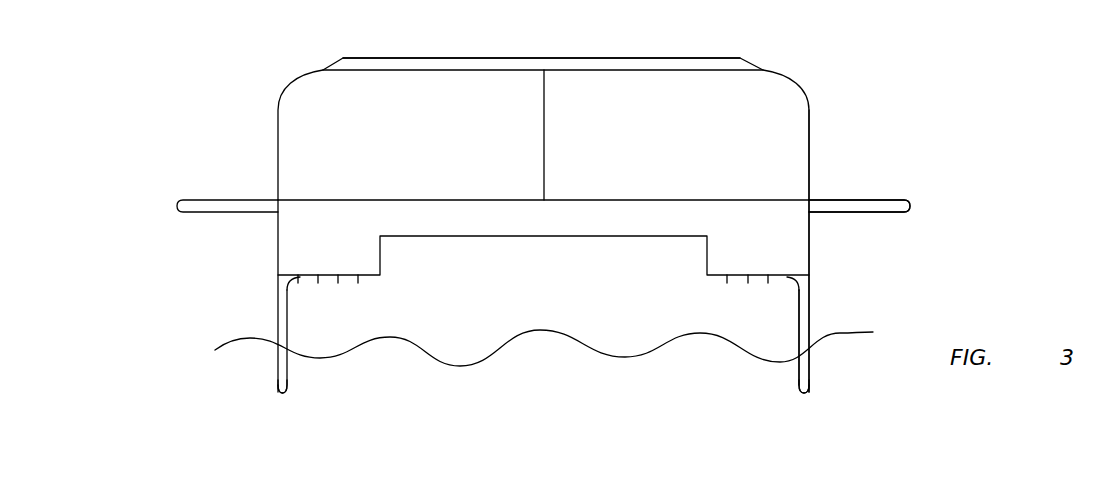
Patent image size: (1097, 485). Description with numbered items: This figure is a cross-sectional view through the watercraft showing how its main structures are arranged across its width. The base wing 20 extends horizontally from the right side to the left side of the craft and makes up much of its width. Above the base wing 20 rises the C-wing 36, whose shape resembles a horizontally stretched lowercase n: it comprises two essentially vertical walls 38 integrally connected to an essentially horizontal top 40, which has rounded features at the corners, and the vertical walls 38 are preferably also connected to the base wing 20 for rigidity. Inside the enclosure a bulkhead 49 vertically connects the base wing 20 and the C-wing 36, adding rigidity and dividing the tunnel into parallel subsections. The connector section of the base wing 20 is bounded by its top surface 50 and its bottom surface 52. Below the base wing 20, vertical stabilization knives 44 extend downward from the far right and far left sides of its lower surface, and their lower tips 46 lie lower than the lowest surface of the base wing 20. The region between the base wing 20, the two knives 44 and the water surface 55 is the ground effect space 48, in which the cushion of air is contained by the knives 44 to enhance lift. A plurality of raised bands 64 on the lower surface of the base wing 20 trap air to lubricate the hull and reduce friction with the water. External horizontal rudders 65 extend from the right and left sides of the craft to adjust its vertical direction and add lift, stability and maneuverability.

The base wing 20 is at (433, 220).
The C-wing 36 is at (580, 57).
The vertical walls 38 is at (810, 132).
The horizontal top 40 is at (647, 63).
The vertical stabilization knives 44 is at (277, 310).
The lower tips 46 is at (278, 377).
The ground effect space 48 is at (638, 322).
The bulkhead 49 is at (543, 103).
The top surface of the connector section 50 is at (583, 195).
The bottom surface of the connector section 52 is at (540, 238).
The water surface 55 is at (838, 335).
The raised bands 64 is at (358, 278).
The external horizontal rudders 65 is at (847, 199).